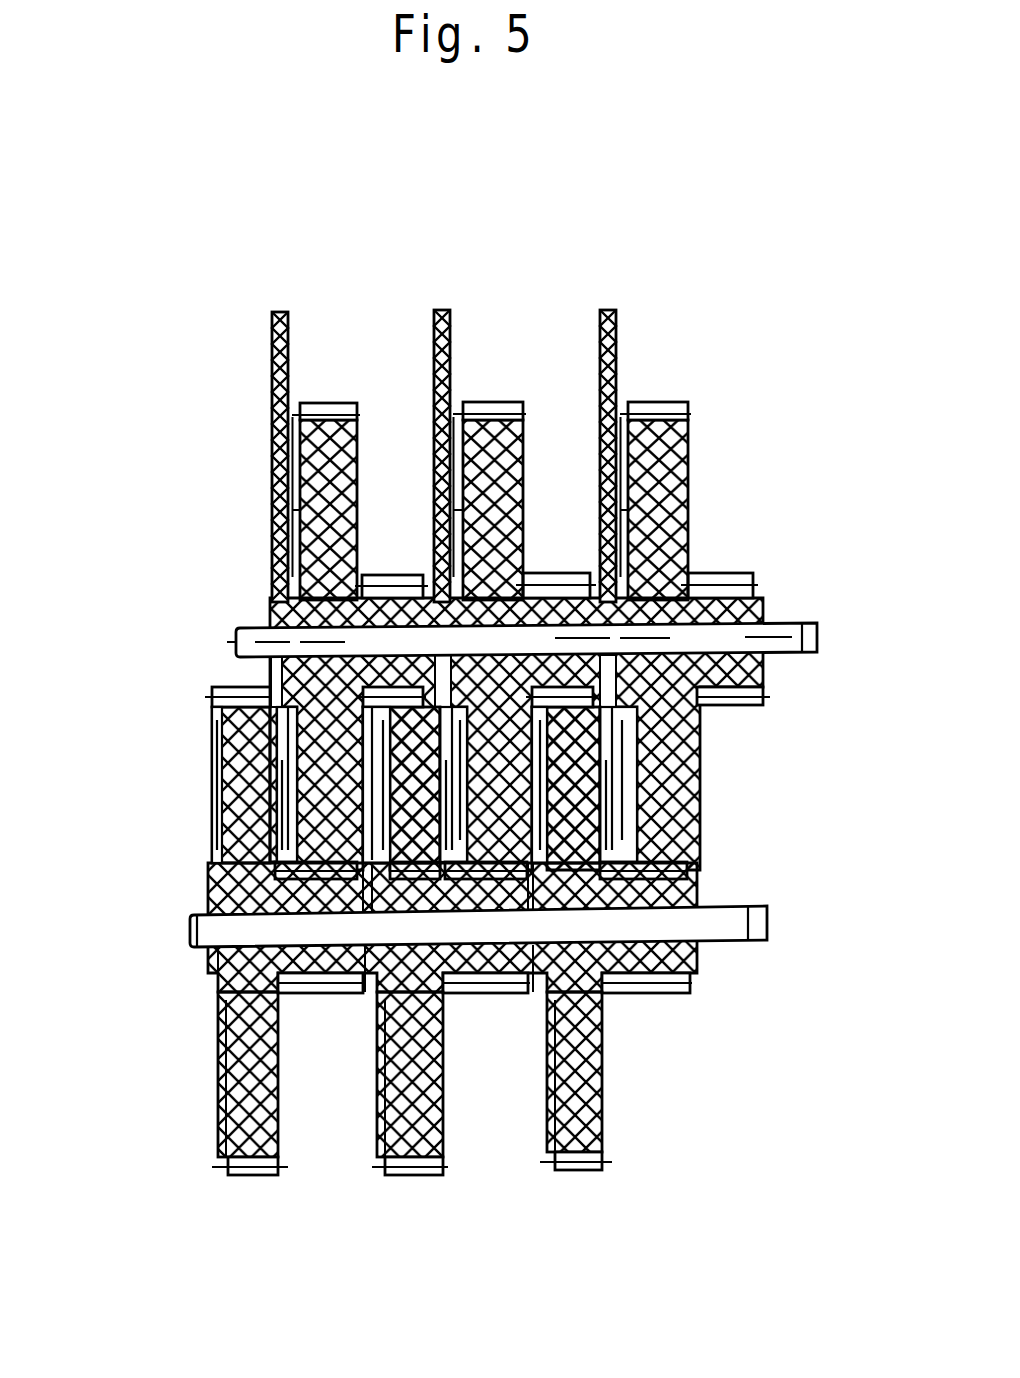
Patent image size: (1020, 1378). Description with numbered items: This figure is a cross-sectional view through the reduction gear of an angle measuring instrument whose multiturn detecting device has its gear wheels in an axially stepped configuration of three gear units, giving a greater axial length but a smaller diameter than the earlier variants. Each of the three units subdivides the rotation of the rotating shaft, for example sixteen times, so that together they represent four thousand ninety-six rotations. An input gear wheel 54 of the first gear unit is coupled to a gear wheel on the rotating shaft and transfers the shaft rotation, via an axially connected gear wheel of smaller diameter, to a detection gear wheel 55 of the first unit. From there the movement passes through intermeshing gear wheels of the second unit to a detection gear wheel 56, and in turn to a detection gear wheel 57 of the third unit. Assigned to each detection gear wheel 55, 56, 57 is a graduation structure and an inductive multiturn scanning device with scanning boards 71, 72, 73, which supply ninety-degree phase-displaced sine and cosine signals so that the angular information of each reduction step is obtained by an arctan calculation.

The scanning board 71 is at (280, 306).
The scanning board 72 is at (442, 304).
The scanning board 73 is at (610, 304).
The detection gear wheel 55 is at (325, 455).
The detection gear wheel 56 is at (497, 452).
The detection gear wheel 57 is at (692, 447).
The input gear wheel 54 is at (215, 1082).